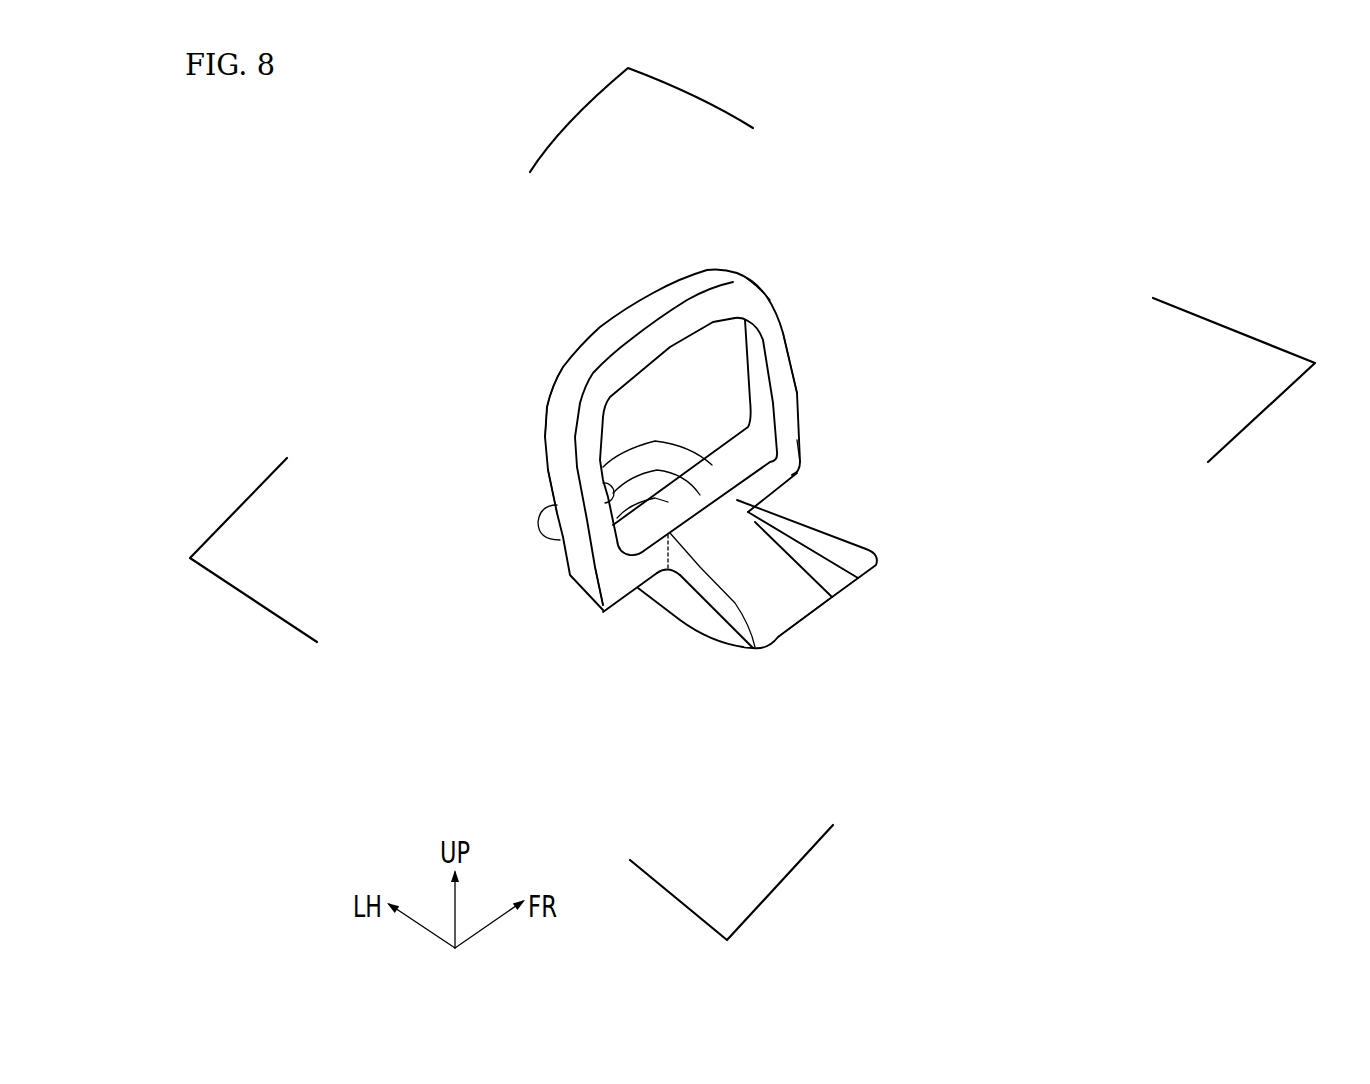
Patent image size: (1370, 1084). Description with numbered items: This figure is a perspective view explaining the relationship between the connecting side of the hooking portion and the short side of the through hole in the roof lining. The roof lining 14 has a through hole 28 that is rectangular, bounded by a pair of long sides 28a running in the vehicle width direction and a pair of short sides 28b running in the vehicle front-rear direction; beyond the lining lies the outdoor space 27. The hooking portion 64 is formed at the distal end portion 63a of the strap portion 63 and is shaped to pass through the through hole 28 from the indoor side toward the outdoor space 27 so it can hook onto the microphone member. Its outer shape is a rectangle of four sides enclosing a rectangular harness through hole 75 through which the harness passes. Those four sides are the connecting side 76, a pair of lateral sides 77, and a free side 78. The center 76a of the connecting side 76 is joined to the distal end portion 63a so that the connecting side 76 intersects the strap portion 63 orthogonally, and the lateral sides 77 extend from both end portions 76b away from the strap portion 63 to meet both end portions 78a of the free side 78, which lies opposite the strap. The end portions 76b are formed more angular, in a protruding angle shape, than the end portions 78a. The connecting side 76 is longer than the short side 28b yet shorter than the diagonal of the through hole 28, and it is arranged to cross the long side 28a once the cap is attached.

The roof lining 14 is at (915, 283).
The outdoor space 27 is at (997, 631).
The through hole 28 is at (668, 617).
The long side 28a is at (713, 545).
The short side 28b is at (624, 448).
The strap portion 63 is at (803, 563).
The distal end portion 63a is at (647, 582).
The hooking portion 64 is at (628, 323).
The harness through hole 75 is at (620, 497).
The connecting side 76 is at (767, 487).
The center 76a is at (693, 507).
The end portion 76b is at (610, 583).
The lateral side 77 is at (778, 375).
The free side 78 is at (675, 293).
The end portion 78a is at (757, 298).